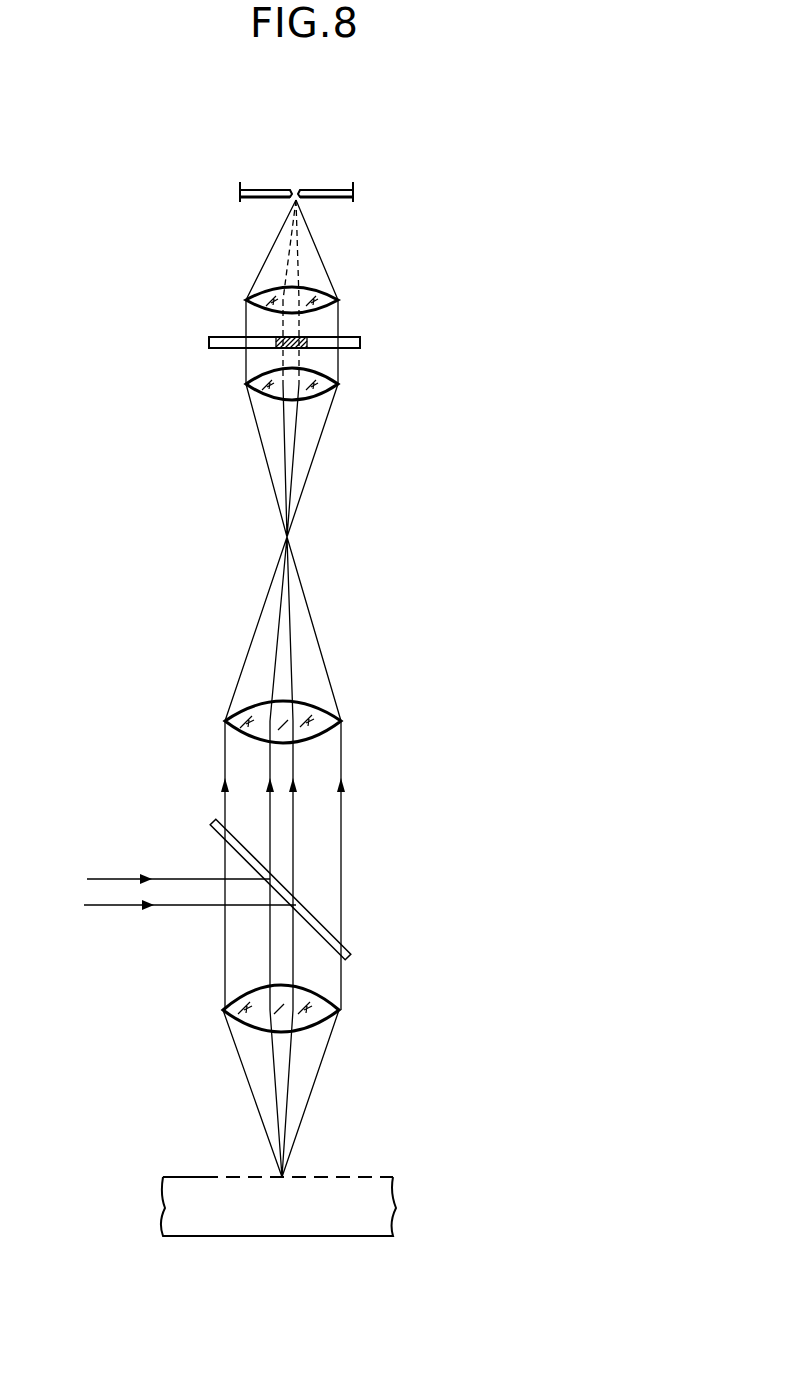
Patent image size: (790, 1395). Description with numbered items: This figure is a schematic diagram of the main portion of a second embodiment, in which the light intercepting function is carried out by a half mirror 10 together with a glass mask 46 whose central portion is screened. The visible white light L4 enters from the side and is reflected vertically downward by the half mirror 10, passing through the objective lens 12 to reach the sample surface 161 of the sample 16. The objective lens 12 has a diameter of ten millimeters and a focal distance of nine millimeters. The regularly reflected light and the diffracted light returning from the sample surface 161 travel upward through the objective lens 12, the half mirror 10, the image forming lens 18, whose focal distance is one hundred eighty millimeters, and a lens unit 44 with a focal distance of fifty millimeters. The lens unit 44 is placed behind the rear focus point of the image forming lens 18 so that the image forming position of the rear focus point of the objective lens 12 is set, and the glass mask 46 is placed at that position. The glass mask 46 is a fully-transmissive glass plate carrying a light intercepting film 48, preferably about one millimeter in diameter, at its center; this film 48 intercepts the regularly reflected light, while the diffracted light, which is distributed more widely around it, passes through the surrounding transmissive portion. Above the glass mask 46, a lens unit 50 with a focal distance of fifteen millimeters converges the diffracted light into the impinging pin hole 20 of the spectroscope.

The impinging pin hole 20 is at (296, 186).
The lens unit 50 is at (330, 300).
The glass mask 46 is at (362, 342).
The light intercepting film 48 is at (280, 348).
The lens unit 44 is at (334, 383).
The image forming lens 18 is at (325, 721).
The half mirror 10 is at (320, 918).
The objective lens 12 is at (320, 1010).
The sample 16 is at (404, 1200).
The sample surface 161 is at (332, 1176).
The visible white light L4 is at (166, 892).